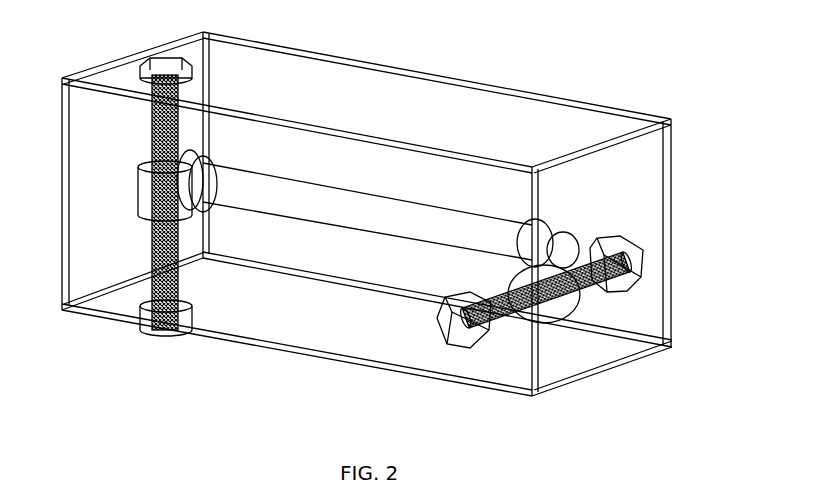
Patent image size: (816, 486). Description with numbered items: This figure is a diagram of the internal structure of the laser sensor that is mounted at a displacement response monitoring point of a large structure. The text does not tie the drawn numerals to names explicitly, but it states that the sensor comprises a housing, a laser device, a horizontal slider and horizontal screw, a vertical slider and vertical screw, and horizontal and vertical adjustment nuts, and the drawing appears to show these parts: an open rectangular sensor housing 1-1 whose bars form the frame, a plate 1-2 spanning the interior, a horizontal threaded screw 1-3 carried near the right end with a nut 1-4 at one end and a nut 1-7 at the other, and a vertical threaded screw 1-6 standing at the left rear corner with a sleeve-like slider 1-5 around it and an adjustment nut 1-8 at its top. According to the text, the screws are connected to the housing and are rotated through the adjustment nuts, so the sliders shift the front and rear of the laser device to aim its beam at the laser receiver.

The frame body 1-1 is at (393, 97).
The partition plate 1-2 is at (356, 209).
The horizontal threaded rod 1-3 is at (556, 305).
The nut 1-4 is at (590, 290).
The sleeve 1-5 is at (147, 183).
The vertical threaded rod 1-6 is at (158, 126).
The nut 1-7 is at (441, 325).
The nut 1-8 is at (178, 58).